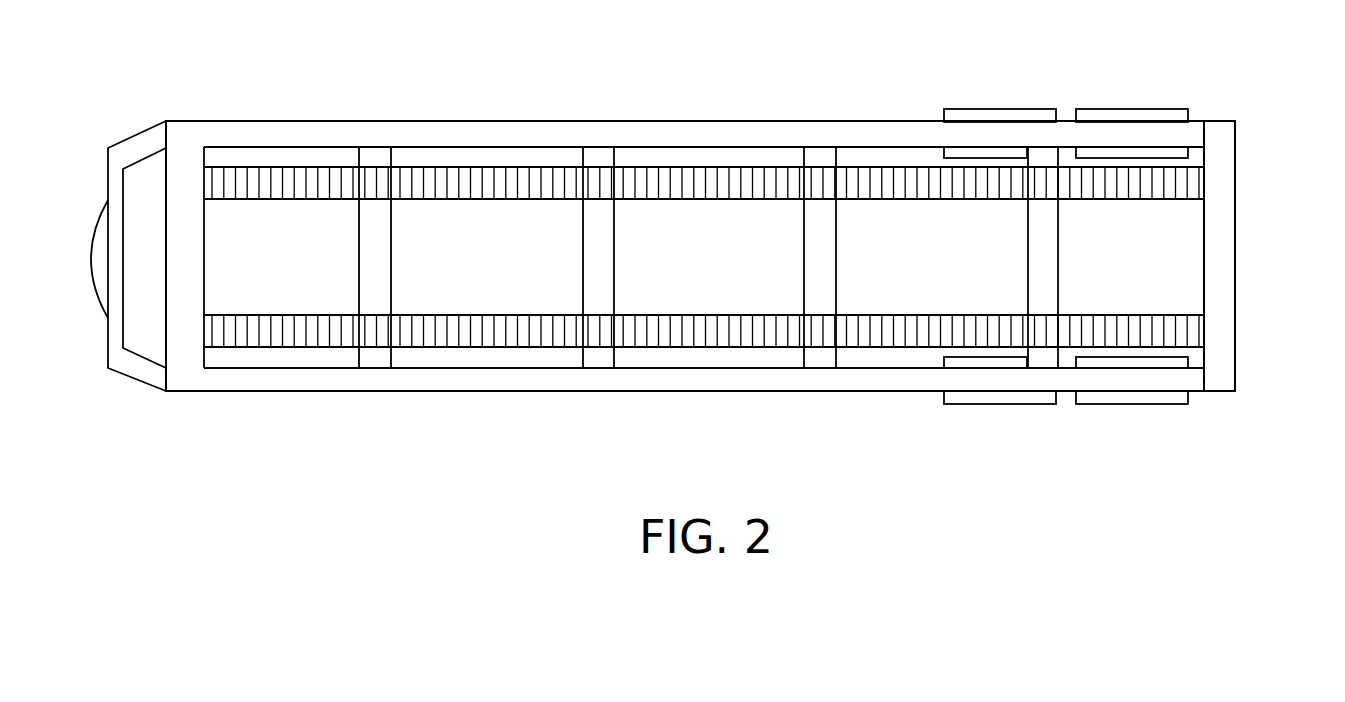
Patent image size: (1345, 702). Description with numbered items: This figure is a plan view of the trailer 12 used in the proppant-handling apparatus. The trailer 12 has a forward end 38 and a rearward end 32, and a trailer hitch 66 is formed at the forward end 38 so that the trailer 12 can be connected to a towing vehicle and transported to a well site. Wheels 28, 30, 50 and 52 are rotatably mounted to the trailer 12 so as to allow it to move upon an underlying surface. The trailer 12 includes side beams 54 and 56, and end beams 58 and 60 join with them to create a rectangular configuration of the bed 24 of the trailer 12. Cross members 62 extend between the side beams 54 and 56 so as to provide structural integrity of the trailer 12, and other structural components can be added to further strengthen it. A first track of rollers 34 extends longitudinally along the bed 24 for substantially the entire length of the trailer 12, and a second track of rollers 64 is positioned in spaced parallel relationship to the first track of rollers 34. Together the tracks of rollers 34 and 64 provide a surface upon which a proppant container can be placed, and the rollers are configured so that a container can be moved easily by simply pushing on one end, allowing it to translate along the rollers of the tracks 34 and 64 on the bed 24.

The trailer 12 is at (733, 121).
The bed 24 is at (1227, 153).
The wheel 28 is at (993, 405).
The wheel 30 is at (1115, 405).
The rearward end 32 is at (1237, 287).
The first track of rollers 34 is at (537, 315).
The forward end 38 is at (166, 232).
The wheel 50 is at (1000, 108).
The wheel 52 is at (1128, 108).
The side beam 54 is at (651, 127).
The side beam 56 is at (570, 392).
The end beam 58 is at (193, 262).
The end beam 60 is at (1237, 232).
The cross member 62 is at (382, 262).
The second track of rollers 64 is at (514, 199).
The trailer hitch 66 is at (130, 143).